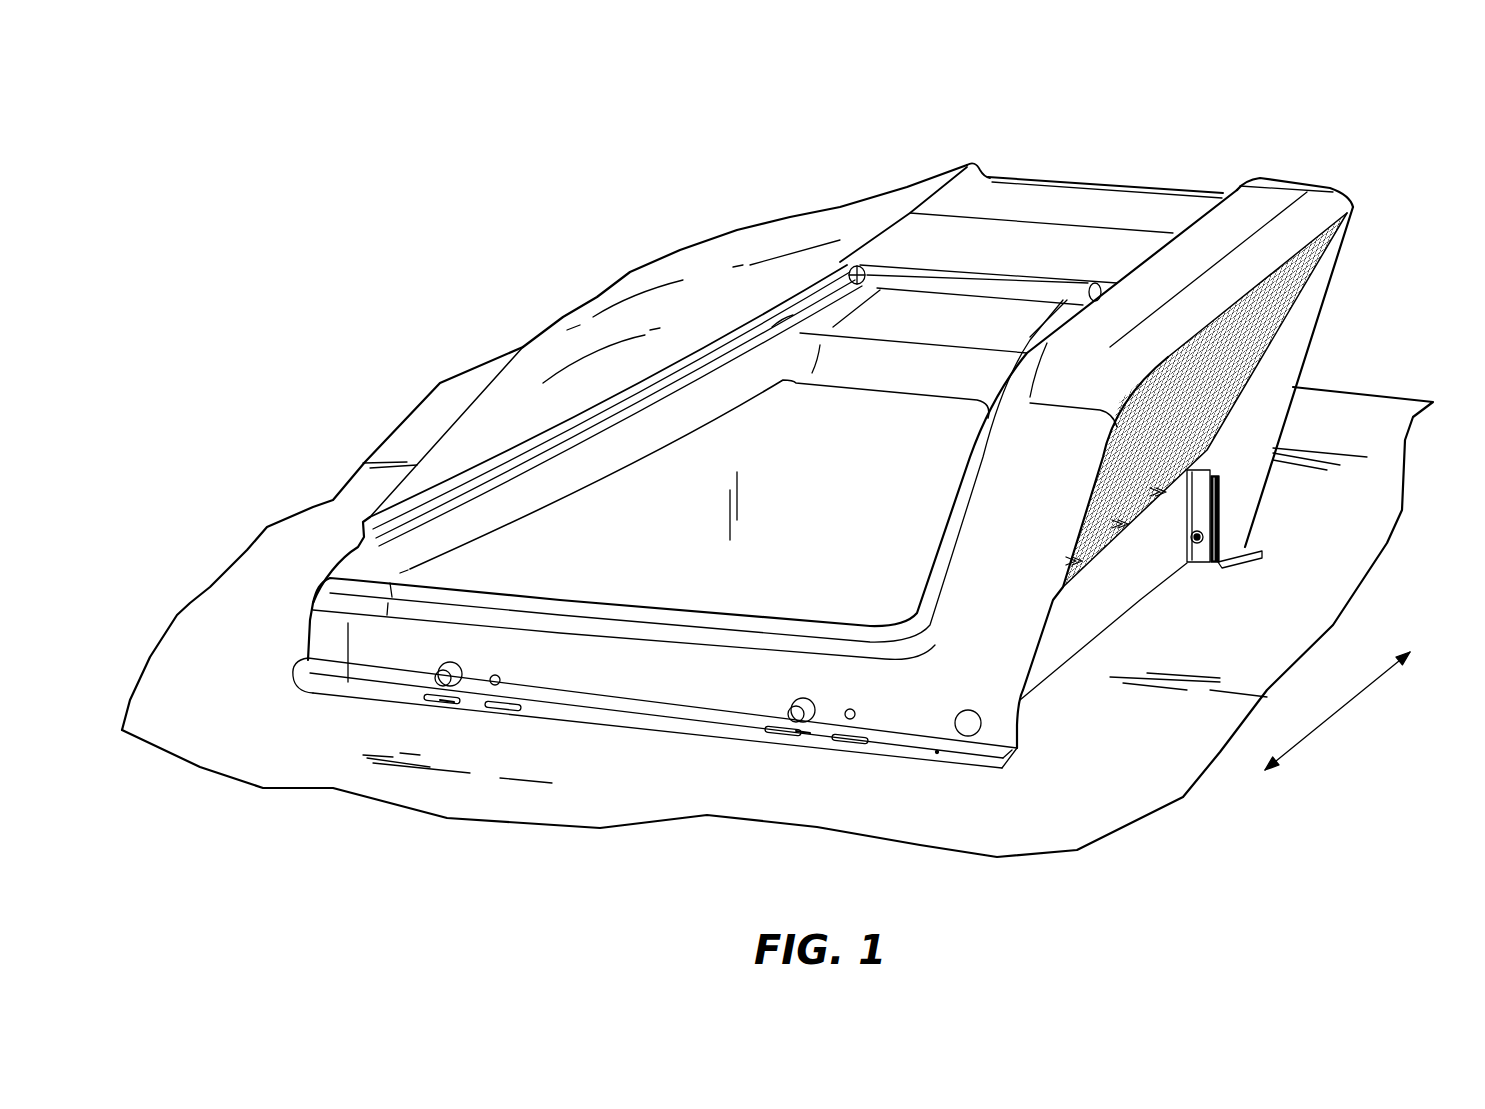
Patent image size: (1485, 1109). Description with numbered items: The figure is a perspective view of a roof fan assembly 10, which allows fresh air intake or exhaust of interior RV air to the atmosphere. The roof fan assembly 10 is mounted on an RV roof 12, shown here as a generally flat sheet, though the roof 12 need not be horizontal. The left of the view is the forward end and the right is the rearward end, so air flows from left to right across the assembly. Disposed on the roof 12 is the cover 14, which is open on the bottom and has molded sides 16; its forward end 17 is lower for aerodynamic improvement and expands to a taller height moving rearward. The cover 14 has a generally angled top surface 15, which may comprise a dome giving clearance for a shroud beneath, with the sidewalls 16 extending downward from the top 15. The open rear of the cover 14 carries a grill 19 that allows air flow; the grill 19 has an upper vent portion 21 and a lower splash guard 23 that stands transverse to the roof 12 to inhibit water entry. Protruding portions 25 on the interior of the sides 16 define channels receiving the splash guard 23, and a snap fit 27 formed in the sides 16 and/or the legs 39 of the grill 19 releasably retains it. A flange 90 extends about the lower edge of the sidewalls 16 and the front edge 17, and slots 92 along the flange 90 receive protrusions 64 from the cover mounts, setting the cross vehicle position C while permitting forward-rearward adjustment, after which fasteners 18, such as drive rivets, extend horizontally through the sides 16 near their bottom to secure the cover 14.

The roof fan assembly 10 is at (333, 162).
The roof 12 is at (1333, 563).
The cover 14 is at (1322, 147).
The top surface 15 is at (778, 293).
The sides 16 is at (767, 525).
The forward end 17 is at (266, 525).
The fasteners 18 is at (437, 680).
The grill 19 is at (1298, 330).
The upper vent portion 21 is at (1215, 418).
The splash guard 23 is at (1135, 578).
The protruding portions 25 is at (1218, 518).
The snap fit 27 is at (968, 742).
The legs 39 is at (1207, 496).
The protrusions 64 is at (446, 703).
The flange 90 is at (653, 730).
The slots 92 is at (428, 700).
The cross vehicle position C is at (1338, 715).